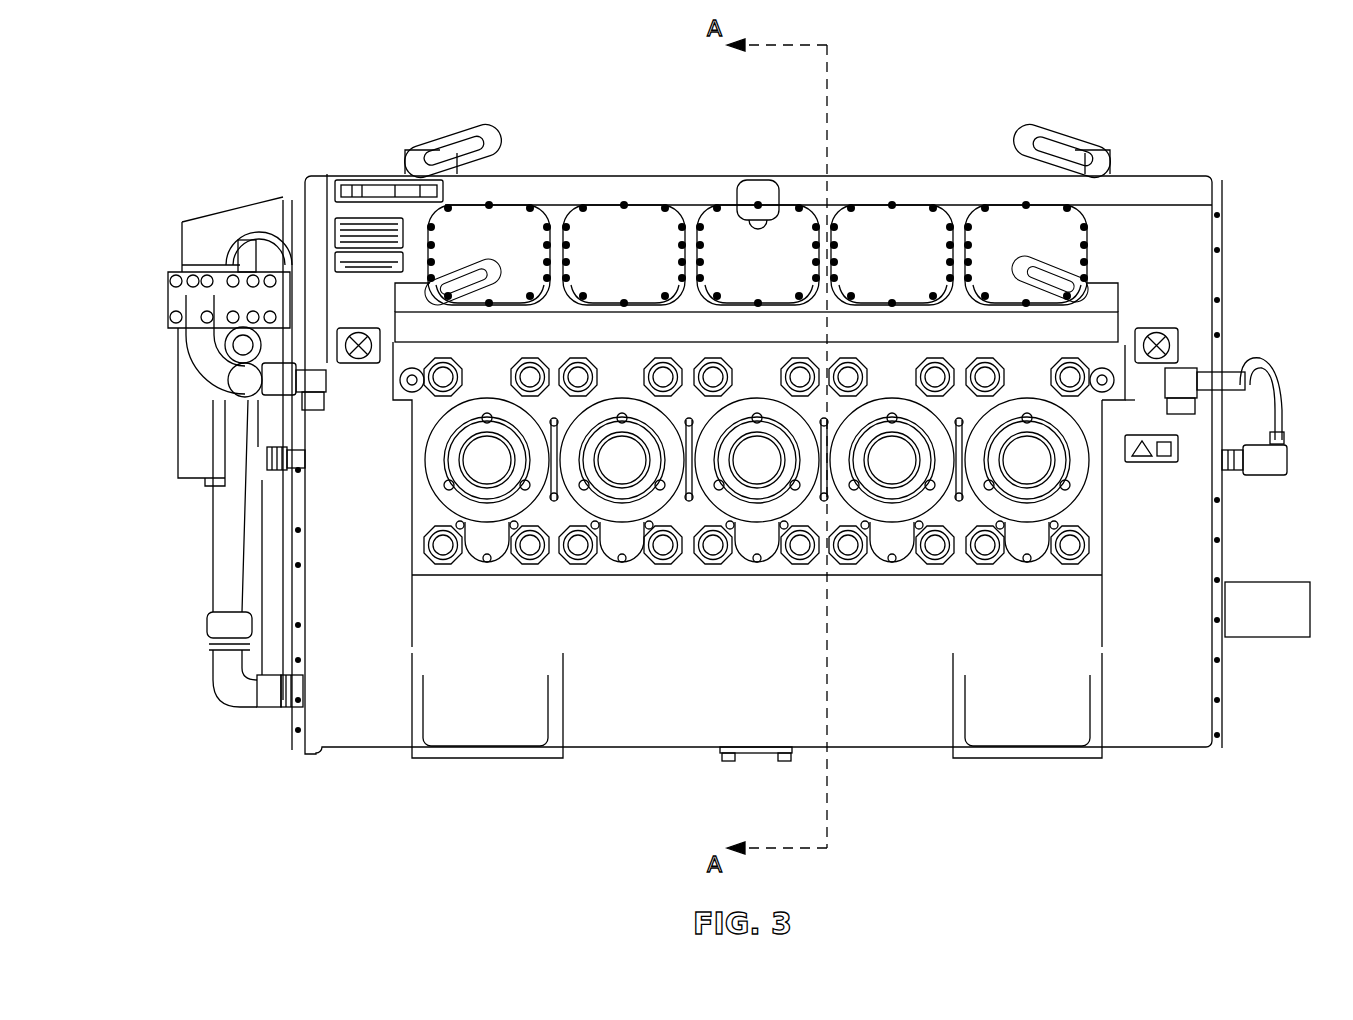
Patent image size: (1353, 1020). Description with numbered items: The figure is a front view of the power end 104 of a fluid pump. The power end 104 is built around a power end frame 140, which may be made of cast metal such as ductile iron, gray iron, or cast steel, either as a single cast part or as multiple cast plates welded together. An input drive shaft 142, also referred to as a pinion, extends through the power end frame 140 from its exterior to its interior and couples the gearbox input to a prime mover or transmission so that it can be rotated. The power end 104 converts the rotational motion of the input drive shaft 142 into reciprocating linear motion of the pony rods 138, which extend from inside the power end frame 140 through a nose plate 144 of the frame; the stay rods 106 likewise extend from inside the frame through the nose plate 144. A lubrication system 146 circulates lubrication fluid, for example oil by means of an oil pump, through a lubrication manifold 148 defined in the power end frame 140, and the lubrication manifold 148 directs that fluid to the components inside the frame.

The power end 104 is at (276, 130).
The stay rods 106 is at (1098, 549).
The pony rods 138 is at (1073, 462).
The power end frame 140 is at (1165, 195).
The input drive shaft 142 is at (1269, 597).
The nose plate 144 is at (689, 567).
The lubrication system 146 is at (162, 360).
The lubrication manifold 148 is at (1233, 480).